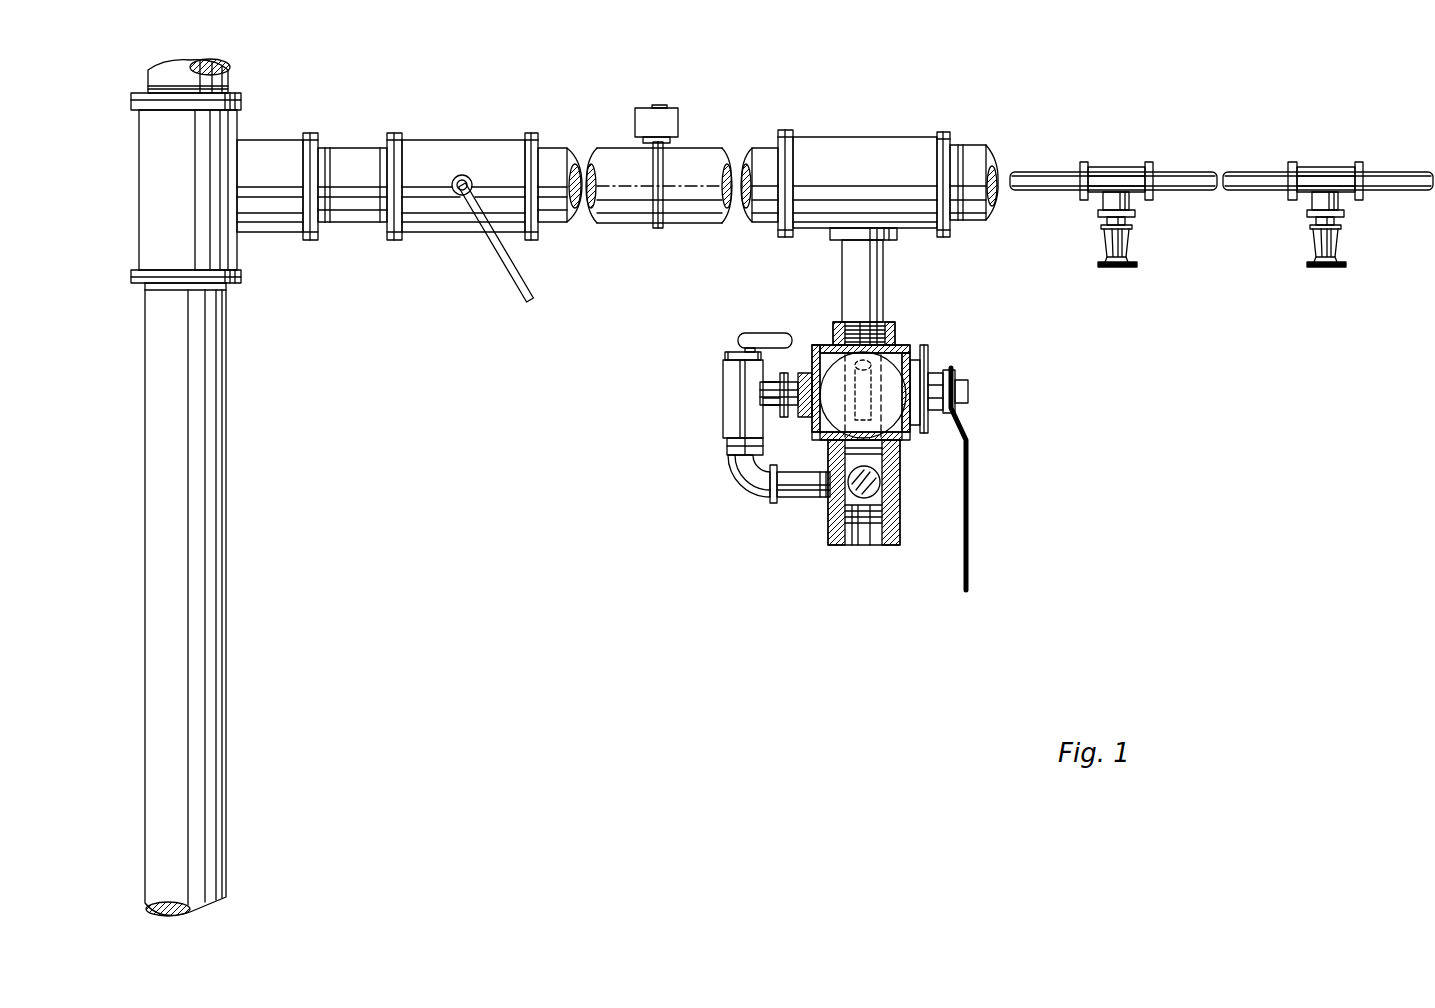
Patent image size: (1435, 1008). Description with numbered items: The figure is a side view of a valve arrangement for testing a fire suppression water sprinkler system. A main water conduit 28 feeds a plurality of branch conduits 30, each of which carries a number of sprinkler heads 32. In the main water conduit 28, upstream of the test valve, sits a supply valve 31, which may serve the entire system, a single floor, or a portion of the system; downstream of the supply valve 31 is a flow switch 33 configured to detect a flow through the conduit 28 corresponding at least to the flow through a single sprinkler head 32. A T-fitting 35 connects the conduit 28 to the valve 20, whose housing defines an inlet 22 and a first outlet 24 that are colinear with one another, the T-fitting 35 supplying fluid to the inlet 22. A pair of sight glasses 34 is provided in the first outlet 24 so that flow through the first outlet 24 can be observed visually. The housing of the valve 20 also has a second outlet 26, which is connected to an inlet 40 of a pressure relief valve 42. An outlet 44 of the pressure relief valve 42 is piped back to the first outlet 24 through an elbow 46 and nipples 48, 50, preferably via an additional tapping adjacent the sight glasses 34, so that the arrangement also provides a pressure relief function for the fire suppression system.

The valve 20 is at (912, 345).
The inlet 22 is at (895, 330).
The first outlet 24 is at (900, 536).
The second outlet 26 is at (803, 372).
The main water conduit 28 is at (354, 148).
The branch conduits 30 is at (1048, 172).
The supply valve 31 is at (463, 147).
The sprinkler heads 32 is at (1133, 216).
The flow switch 33 is at (678, 118).
The sight glasses 34 is at (860, 495).
The T-fitting 35 is at (866, 137).
The inlet of pressure relief valve 40 is at (785, 372).
The pressure relief valve 42 is at (723, 393).
The outlet of pressure relief valve 44 is at (727, 443).
The elbow 46 is at (757, 500).
The nipple 48 is at (763, 440).
The nipple 50 is at (800, 497).